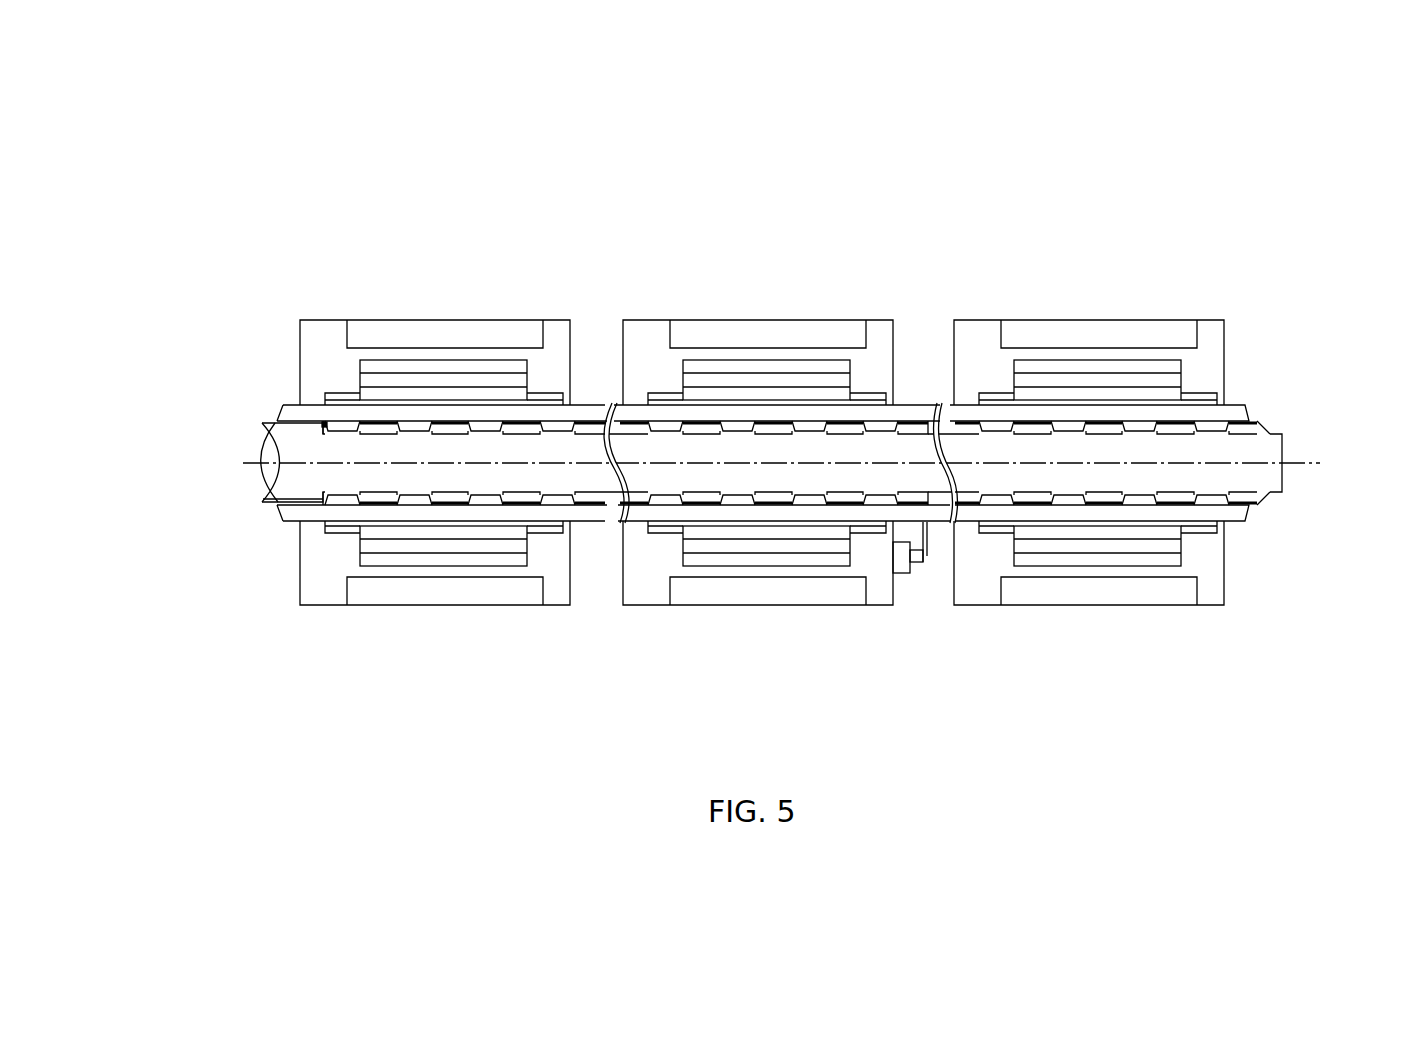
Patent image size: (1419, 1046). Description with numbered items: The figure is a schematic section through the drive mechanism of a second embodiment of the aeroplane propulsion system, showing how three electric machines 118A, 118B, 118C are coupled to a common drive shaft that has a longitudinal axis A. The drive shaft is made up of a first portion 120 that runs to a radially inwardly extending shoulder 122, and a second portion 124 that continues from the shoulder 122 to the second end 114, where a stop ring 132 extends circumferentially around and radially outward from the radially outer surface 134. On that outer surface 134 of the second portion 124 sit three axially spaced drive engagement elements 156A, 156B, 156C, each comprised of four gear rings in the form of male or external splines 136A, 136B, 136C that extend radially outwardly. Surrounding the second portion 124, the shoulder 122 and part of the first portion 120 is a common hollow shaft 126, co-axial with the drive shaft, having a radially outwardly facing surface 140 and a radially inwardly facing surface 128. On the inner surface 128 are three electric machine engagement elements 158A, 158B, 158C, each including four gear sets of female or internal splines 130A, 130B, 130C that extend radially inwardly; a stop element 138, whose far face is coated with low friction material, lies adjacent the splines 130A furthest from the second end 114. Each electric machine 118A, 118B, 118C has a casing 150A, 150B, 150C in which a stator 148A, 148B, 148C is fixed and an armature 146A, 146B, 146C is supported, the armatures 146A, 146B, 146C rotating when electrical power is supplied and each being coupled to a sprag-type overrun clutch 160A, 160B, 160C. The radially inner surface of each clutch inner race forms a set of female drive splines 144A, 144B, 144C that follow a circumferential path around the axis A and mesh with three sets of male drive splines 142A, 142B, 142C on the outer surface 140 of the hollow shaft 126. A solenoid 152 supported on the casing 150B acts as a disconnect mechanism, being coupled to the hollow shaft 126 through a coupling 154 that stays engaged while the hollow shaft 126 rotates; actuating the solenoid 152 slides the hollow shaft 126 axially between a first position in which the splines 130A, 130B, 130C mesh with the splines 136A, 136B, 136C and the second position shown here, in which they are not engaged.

The second end 114 is at (1285, 458).
The electric machine 118A is at (388, 262).
The electric machine 118B is at (708, 258).
The electric machine 118C is at (1146, 258).
The first portion 120 is at (278, 483).
The shoulder 122 is at (280, 428).
The second portion 124 is at (1032, 473).
The hollow shaft 126 is at (910, 415).
The radially inwardly facing surface 128 is at (428, 503).
The splines 130A is at (335, 427).
The splines 130B is at (660, 427).
The splines 130C is at (992, 427).
The stop ring 132 is at (1270, 425).
The radially outer surface 134 is at (613, 495).
The splines 136A is at (372, 497).
The splines 136B is at (697, 498).
The splines 136C is at (1245, 505).
The stop element 138 is at (325, 425).
The radially outwardly facing surface 140 is at (593, 403).
The male drive splines 142A is at (547, 527).
The male drive splines 142B is at (870, 398).
The male drive splines 142C is at (1195, 398).
The female drive splines 144A is at (458, 532).
The female drive splines 144B is at (782, 532).
The female drive splines 144C is at (1152, 532).
The armature 146A is at (388, 560).
The armature 146B is at (737, 547).
The armature 146C is at (1118, 560).
The stator 148A is at (468, 333).
The stator 148B is at (795, 333).
The stator 148C is at (1040, 333).
The casing 150A is at (300, 335).
The casing 150B is at (623, 320).
The casing 150C is at (985, 605).
The solenoid 152 is at (903, 557).
The coupling 154 is at (927, 540).
The drive engagement element 156A is at (367, 443).
The drive engagement element 156B is at (722, 458).
The drive engagement element 156C is at (1184, 440).
The electric machine engagement element 158A is at (413, 393).
The electric machine engagement element 158B is at (737, 393).
The electric machine engagement element 158C is at (1121, 400).
The overrun clutch 160A is at (483, 547).
The overrun clutch 160B is at (752, 560).
The overrun clutch 160C is at (1068, 547).
The longitudinal axis A is at (278, 448).